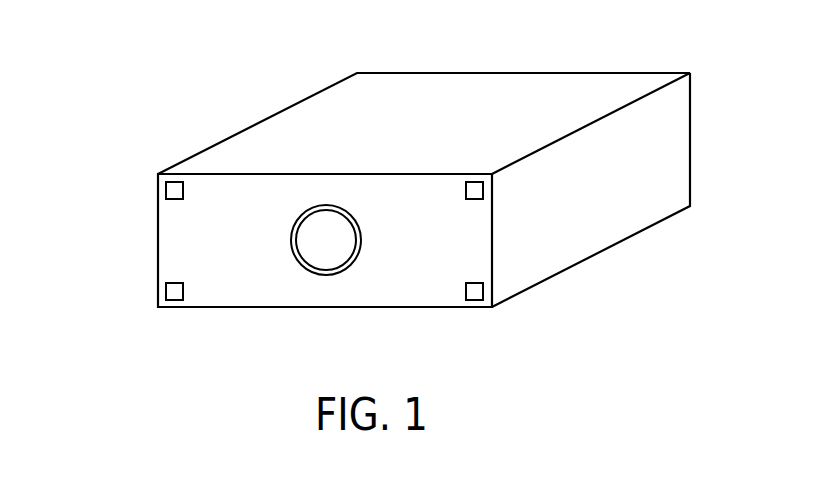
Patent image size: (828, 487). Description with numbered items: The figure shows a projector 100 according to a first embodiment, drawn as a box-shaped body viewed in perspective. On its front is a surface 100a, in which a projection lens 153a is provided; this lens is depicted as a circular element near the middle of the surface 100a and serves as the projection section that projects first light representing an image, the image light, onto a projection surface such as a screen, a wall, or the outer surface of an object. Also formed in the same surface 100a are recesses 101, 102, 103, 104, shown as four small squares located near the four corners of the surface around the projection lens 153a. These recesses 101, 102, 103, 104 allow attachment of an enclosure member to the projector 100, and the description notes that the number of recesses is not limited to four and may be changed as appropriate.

The projector 100 is at (530, 88).
The surface 100a is at (237, 213).
The recess 101 is at (166, 191).
The recess 102 is at (166, 293).
The recess 103 is at (483, 191).
The recess 104 is at (483, 290).
The projection lens 153a is at (328, 275).